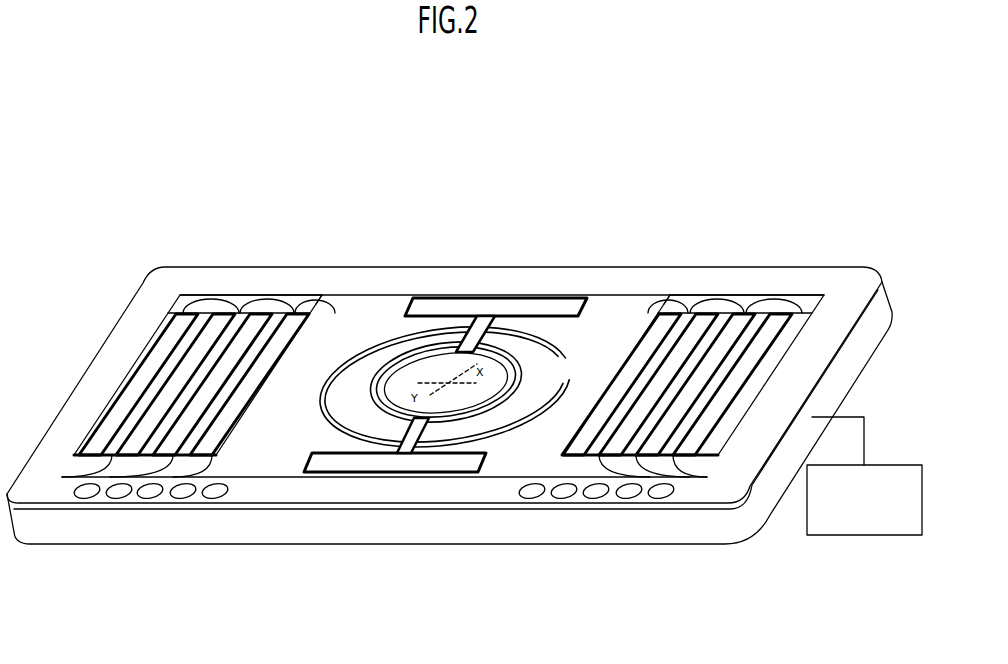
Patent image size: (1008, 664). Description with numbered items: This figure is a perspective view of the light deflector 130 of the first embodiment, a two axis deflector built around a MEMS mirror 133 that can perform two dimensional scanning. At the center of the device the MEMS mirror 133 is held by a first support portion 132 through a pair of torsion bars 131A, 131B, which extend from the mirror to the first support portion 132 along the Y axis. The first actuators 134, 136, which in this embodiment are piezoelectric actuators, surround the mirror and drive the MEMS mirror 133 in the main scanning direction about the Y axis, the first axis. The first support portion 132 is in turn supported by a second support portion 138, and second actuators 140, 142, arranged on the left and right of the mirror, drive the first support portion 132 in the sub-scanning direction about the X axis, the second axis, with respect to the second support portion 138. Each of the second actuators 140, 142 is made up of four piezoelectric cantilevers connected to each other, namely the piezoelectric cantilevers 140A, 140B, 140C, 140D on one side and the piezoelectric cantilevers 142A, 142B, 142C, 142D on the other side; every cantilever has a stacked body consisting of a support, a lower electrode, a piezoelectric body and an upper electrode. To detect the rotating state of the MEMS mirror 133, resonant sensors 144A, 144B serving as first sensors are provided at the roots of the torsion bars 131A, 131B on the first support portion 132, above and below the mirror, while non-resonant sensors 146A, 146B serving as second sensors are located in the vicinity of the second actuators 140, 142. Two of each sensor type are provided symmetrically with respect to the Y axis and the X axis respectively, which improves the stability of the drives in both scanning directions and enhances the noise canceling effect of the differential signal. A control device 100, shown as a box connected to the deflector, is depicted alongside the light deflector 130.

The control device 100 is at (892, 535).
The light deflector 130 is at (728, 127).
The torsion bar 131A is at (458, 353).
The torsion bar 131B is at (428, 430).
The first support portion 132 is at (378, 312).
The MEMS mirror 133 is at (495, 360).
The first actuator 134 is at (365, 423).
The first actuator 136 is at (512, 408).
The second support portion 138 is at (240, 493).
The second actuator 140 is at (204, 316).
The piezoelectric cantilever 140A is at (265, 327).
The piezoelectric cantilever 140B is at (253, 318).
The piezoelectric cantilever 140C is at (214, 318).
The piezoelectric cantilever 140D is at (188, 318).
The second actuator 142 is at (710, 317).
The piezoelectric cantilever 142A is at (761, 327).
The piezoelectric cantilever 142B is at (755, 317).
The piezoelectric cantilever 142C is at (723, 323).
The piezoelectric cantilever 142D is at (697, 317).
The resonant sensor 144A is at (500, 308).
The resonant sensor 144B is at (383, 463).
The non-resonant sensor 146A is at (318, 314).
The non-resonant sensor 146B is at (662, 320).